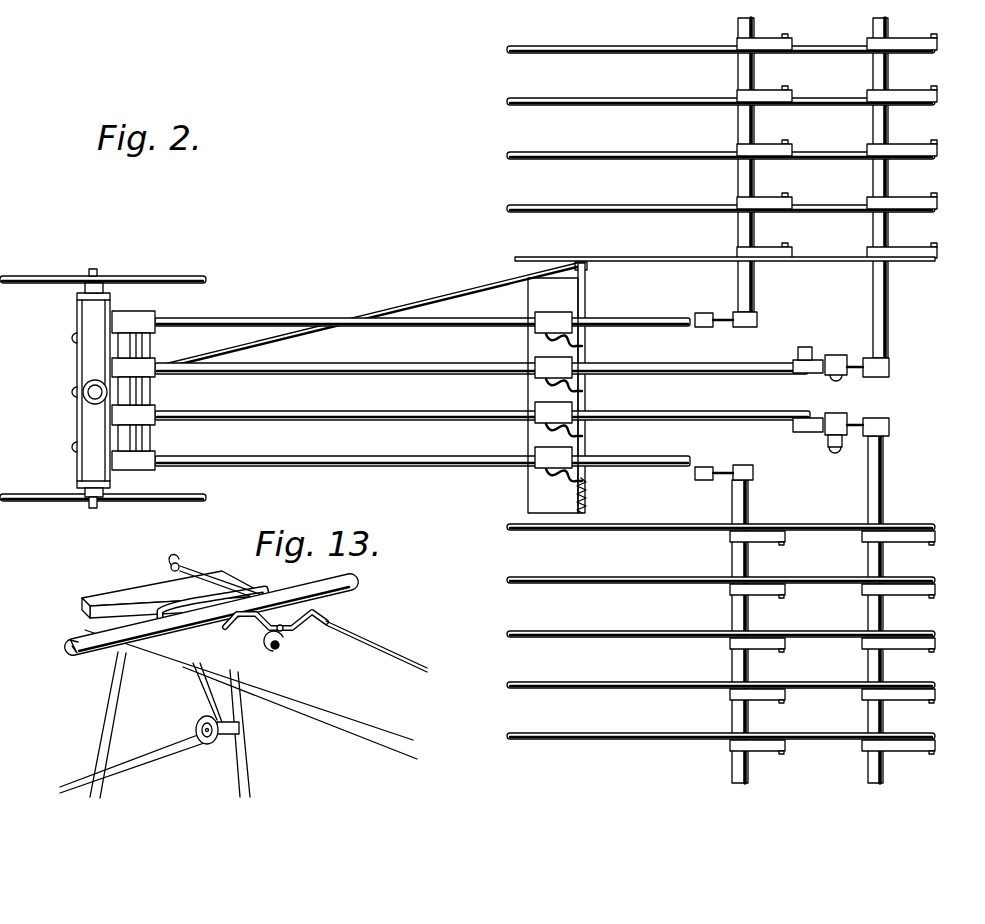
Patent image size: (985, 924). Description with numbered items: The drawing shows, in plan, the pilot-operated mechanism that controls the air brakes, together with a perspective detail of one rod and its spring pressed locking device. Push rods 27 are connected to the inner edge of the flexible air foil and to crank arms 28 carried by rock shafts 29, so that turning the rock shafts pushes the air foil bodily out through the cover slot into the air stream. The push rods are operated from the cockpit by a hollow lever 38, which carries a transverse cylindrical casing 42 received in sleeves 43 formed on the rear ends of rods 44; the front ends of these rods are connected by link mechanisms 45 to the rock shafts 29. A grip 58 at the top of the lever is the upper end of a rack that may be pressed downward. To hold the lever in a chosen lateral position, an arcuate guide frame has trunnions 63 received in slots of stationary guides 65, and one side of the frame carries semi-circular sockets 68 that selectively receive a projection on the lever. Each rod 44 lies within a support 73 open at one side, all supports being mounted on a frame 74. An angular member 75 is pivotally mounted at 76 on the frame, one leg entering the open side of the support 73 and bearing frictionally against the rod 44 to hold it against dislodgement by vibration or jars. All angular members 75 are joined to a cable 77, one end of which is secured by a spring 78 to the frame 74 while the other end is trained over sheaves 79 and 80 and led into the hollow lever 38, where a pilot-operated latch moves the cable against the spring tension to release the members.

In FIG. 2, the push rods 27 is at (642, 54).
In FIG. 2, the crank arms 28 is at (768, 194).
In FIG. 2, the rock shafts 29 is at (873, 292).
In FIG. 2, the hollow lever 38 is at (77, 387).
In FIG. 2, the transverse cylindrical casing 42 is at (154, 355).
In FIG. 2, the sleeves 43 is at (143, 317).
In FIG. 2, the rods 44 is at (434, 365).
In FIG. 13, the rods 44 is at (353, 586).
In FIG. 2, the link mechanisms 45 is at (716, 316).
In FIG. 2, the grip 58 is at (89, 398).
In FIG. 2, the trunnions 63 is at (97, 270).
In FIG. 2, the guides 65 is at (147, 272).
In FIG. 2, the semi-circular sockets 68 is at (74, 339).
In FIG. 2, the support 73 is at (583, 340).
In FIG. 13, the support 73 is at (205, 603).
In FIG. 13, the frame 74 is at (323, 696).
In FIG. 2, the angular member 75 is at (528, 475).
In FIG. 13, the angular member 75 is at (296, 630).
In FIG. 13, the pivot 76 is at (281, 650).
In FIG. 2, the cable 77 is at (418, 306).
In FIG. 13, the cable 77 is at (410, 657).
In FIG. 2, the spring 78 is at (587, 503).
In FIG. 2, the sheave 79 is at (610, 261).
In FIG. 13, the sheave 79 is at (172, 563).
In FIG. 13, the sheave 80 is at (198, 726).